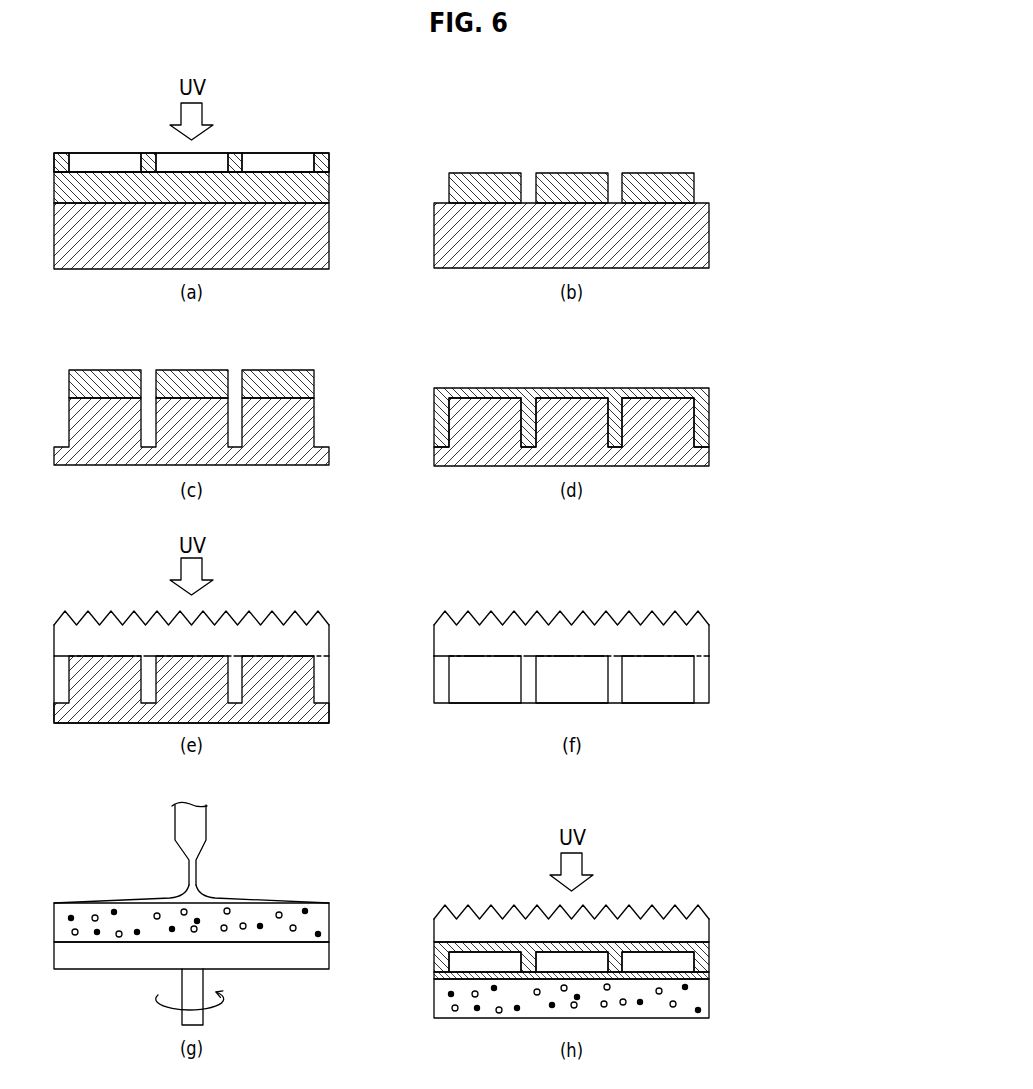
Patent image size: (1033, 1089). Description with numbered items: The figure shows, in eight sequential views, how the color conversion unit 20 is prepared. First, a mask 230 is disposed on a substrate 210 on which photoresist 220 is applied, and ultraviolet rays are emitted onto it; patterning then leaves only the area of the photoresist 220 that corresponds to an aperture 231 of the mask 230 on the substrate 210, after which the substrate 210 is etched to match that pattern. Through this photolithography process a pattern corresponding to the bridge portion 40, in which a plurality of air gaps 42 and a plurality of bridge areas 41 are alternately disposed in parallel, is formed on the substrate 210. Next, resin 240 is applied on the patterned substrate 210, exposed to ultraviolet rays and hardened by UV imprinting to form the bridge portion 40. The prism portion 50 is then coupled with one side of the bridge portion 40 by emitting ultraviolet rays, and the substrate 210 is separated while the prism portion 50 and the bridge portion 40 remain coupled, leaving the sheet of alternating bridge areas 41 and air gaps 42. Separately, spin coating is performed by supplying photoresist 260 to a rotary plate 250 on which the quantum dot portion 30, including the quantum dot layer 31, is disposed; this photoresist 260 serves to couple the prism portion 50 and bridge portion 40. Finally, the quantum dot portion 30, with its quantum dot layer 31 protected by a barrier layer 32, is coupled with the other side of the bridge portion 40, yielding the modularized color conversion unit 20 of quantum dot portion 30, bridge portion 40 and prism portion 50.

The substrate 210 is at (318, 236).
The photoresist 220 is at (318, 189).
The mask 230 is at (323, 161).
The aperture 231 is at (281, 160).
The resin 240 is at (702, 403).
The prism portion 50 is at (323, 640).
The bridge area 41 is at (703, 677).
The air gap 42 is at (660, 692).
The photoresist 260 is at (245, 894).
The quantum dot layer 31 is at (320, 921).
The rotary plate 250 is at (320, 955).
The barrier layer 32 is at (697, 979).
The bridge portion 40 is at (755, 930).
The quantum dot portion 30 is at (755, 990).
The color conversion unit 20 is at (800, 940).